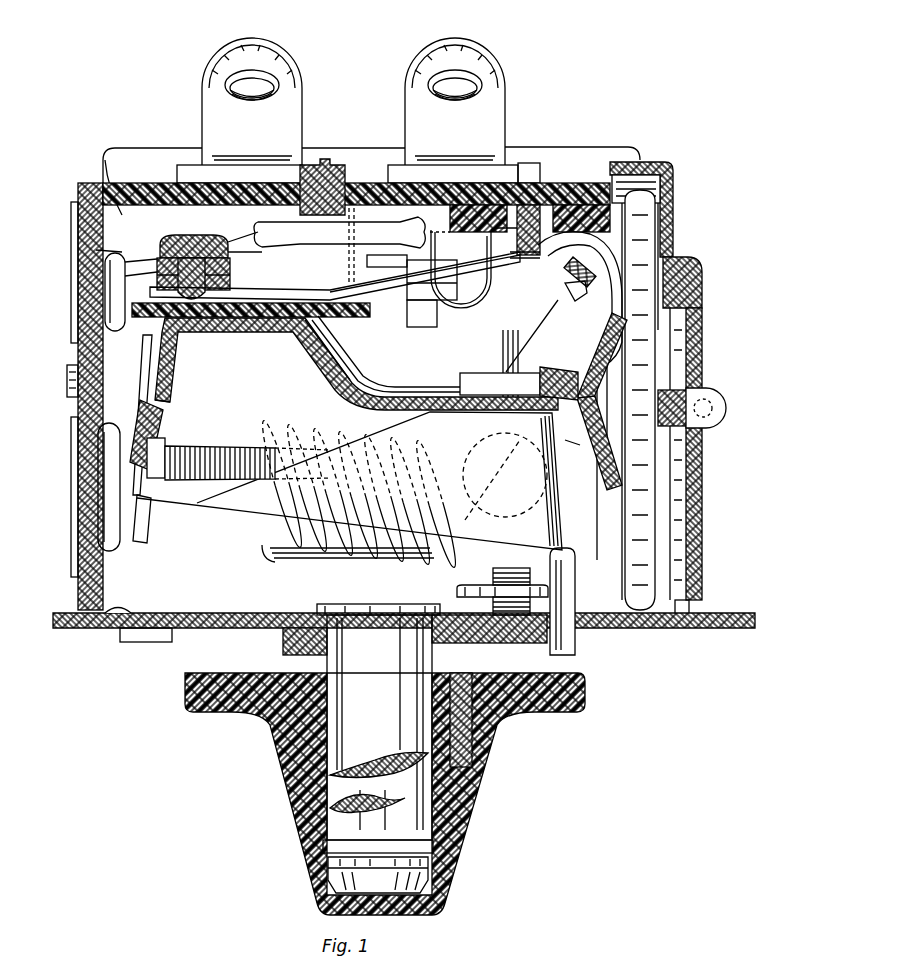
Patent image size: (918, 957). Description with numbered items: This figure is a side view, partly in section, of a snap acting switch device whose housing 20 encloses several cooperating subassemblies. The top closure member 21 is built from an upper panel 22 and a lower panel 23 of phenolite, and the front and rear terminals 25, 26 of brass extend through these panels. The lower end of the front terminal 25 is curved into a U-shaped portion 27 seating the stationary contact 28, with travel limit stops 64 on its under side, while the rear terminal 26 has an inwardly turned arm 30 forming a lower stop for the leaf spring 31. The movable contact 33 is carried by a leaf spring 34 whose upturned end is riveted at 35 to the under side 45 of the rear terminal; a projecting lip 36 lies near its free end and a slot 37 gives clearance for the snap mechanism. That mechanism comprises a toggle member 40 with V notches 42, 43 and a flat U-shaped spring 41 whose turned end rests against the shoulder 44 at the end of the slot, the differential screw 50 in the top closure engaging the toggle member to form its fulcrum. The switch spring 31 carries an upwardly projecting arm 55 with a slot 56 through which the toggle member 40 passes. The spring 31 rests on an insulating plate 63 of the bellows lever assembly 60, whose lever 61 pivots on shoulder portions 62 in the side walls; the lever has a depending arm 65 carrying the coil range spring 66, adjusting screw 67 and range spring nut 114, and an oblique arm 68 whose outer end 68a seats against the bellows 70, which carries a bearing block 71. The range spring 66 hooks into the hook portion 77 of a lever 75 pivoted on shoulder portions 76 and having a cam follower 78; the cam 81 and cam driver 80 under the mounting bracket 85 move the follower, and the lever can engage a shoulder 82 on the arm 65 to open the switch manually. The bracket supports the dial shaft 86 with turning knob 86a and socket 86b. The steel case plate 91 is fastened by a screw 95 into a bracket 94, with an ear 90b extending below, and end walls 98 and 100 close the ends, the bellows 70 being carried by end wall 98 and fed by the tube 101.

The housing 20 is at (140, 165).
The top closure member 21 is at (553, 188).
The upper panel 22 is at (588, 195).
The lower panel 23 is at (112, 190).
The front terminal 25 is at (205, 101).
The rear terminal 26 is at (412, 101).
The U-shaped portion 27 is at (125, 270).
The stationary contact 28 is at (96, 251).
The inwardly turned arm 30 is at (446, 327).
The leaf spring 31 is at (312, 290).
The movable contact 33 is at (160, 250).
The leaf spring 34 is at (467, 262).
The rivet 35 is at (537, 210).
The projecting lip 36 is at (262, 236).
The slot 37 is at (385, 256).
The toggle member 40 is at (262, 256).
The U-shaped spring 41 is at (470, 298).
The V notch 42 is at (256, 246).
The V notch 43 is at (430, 232).
The shoulder 44 is at (512, 256).
The under side of rear terminal 45 is at (505, 212).
The differential screw 50 is at (333, 168).
The upwardly projecting arm 55 is at (348, 282).
The slot 56 is at (384, 250).
The bellows lever assembly 60 is at (247, 333).
The lever 61 is at (320, 343).
The shoulder portions 62 is at (568, 294).
The insulating plate 63 is at (146, 326).
The travel limit stops 64 is at (135, 300).
The depending arm 65 is at (172, 396).
The coil range spring 66 is at (305, 553).
The adjusting screw 67 is at (222, 455).
The obliquely projecting arm 68 is at (380, 390).
The outer end of arm 68a is at (600, 466).
The bellows 70 is at (612, 352).
The bearing block 71 is at (599, 448).
The lever 75 is at (561, 531).
The shoulder portions 76 is at (540, 385).
The hook portion 77 is at (540, 468).
The cam follower 78 is at (576, 637).
The cam driver 80 is at (470, 727).
The cam 81 is at (518, 640).
The shoulder 82 is at (150, 521).
The mounting bracket 85 is at (190, 630).
The dial shaft 86 is at (422, 822).
The turning knob 86a is at (456, 860).
The socket 86b is at (480, 765).
The ear 90b is at (150, 644).
The case plate 91 is at (520, 150).
The bracket 94 is at (458, 593).
The screw 95 is at (492, 574).
The end wall 98 is at (692, 566).
The end wall 100 is at (78, 578).
The tube 101 is at (729, 407).
The range spring nut 114 is at (272, 549).